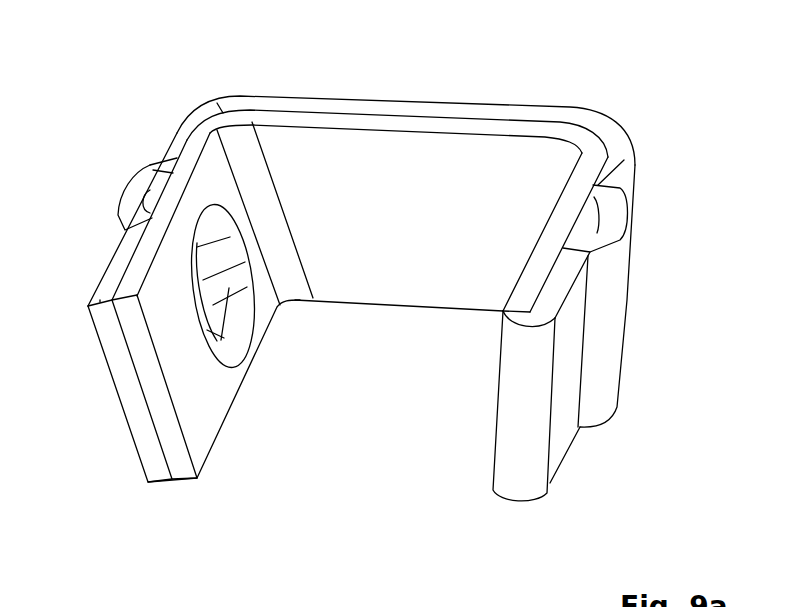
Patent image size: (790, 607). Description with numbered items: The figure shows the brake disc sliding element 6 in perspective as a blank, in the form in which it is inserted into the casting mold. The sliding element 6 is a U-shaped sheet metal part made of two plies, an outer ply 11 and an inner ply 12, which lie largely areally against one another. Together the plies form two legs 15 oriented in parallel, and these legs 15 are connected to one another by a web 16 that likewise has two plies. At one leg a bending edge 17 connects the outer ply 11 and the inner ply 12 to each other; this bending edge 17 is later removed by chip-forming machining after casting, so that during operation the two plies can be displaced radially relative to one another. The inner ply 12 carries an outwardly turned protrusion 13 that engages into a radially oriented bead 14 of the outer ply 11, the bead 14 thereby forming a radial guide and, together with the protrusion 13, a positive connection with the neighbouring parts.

The sliding element 6 is at (227, 483).
The outer ply 11 is at (112, 333).
The inner ply 12 is at (152, 372).
The protrusion 13 is at (222, 272).
The bead 14 is at (153, 200).
The leg 15 is at (117, 420).
The web 16 is at (417, 97).
The bending edge 17 is at (520, 443).